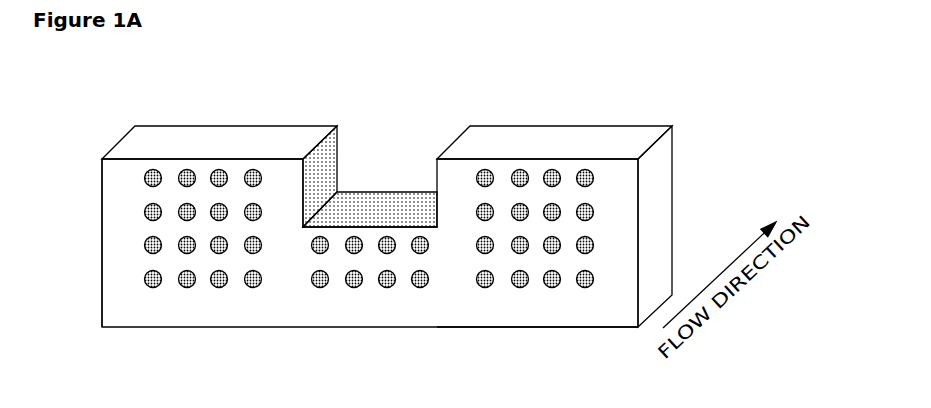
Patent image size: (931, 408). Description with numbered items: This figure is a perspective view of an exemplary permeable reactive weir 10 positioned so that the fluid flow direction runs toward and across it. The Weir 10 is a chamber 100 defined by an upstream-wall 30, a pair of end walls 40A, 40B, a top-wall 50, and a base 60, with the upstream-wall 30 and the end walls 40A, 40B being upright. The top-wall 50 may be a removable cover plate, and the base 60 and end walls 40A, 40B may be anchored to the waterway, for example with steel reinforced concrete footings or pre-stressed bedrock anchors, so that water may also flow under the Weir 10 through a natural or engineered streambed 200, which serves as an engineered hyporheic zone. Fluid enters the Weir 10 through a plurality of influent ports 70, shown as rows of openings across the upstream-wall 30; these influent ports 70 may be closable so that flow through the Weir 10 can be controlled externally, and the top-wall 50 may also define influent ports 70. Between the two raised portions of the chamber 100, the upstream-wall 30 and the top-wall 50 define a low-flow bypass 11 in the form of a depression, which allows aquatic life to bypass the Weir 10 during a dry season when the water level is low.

The permeable reactive weir 10 is at (600, 100).
The chamber 100 is at (201, 122).
The top-wall 50 is at (538, 140).
The low-flow bypass 11 is at (392, 196).
The end wall 40A is at (658, 192).
The end wall 40B is at (88, 181).
The influent port 70 is at (181, 303).
The base 60 is at (280, 342).
The engineered streambed 200 is at (370, 299).
The upstream-wall 30 is at (457, 318).